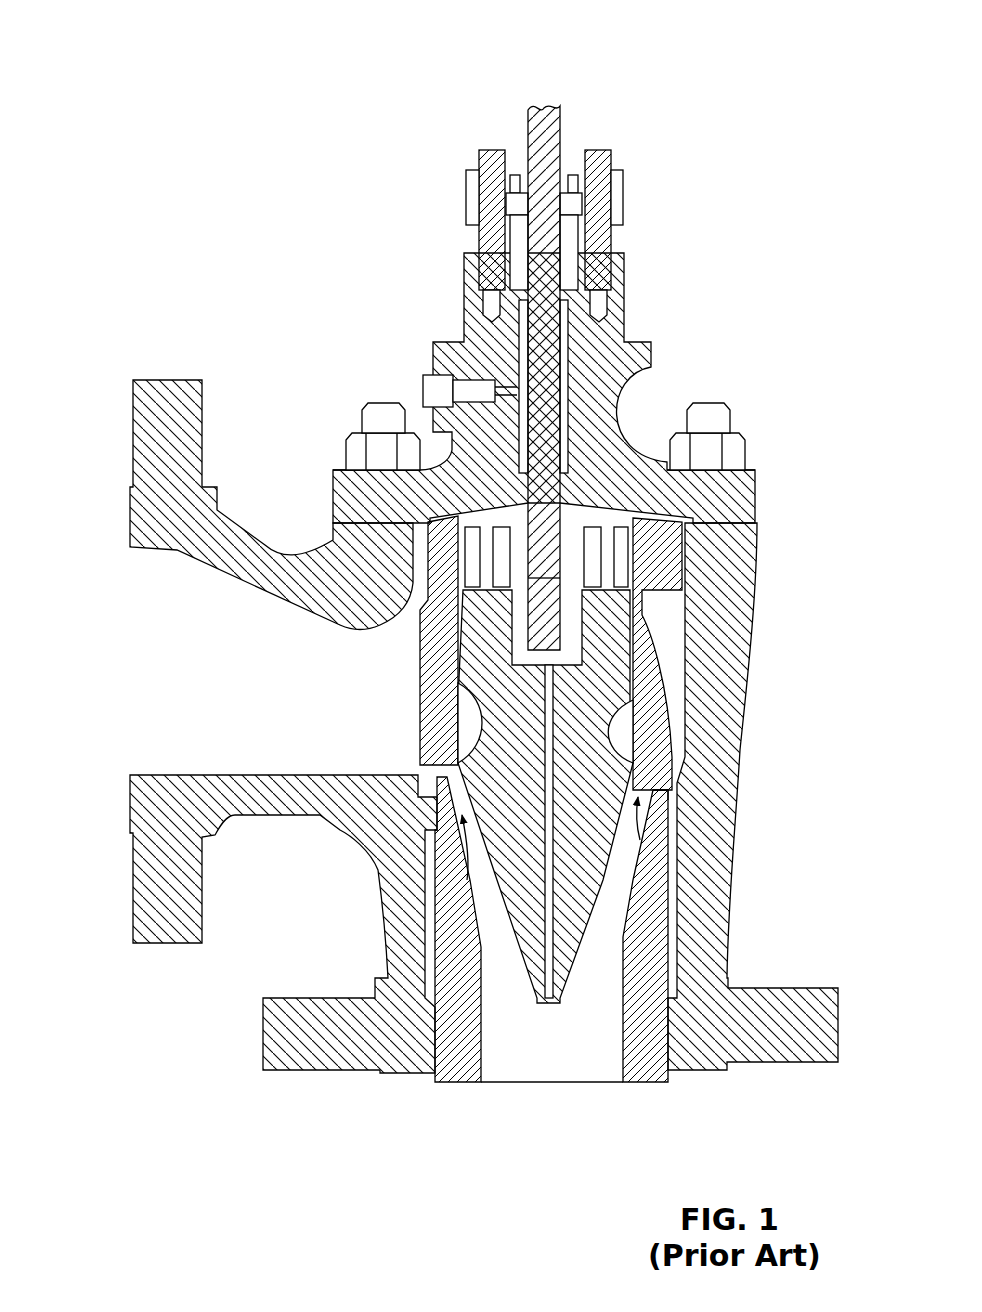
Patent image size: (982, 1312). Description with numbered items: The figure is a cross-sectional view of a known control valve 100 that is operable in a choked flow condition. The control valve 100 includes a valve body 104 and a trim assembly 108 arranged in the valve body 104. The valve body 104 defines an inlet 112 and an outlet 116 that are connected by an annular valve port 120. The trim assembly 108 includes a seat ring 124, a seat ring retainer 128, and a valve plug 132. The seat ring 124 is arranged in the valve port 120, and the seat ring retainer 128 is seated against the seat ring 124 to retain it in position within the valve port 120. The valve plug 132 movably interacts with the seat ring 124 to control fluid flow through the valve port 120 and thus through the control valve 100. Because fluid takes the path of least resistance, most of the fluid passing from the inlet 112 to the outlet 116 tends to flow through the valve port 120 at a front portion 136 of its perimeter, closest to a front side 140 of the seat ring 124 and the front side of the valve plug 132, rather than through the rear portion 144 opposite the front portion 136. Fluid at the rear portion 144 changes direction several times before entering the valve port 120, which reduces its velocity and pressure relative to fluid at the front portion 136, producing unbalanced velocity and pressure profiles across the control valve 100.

The control valve 100 is at (788, 50).
The valve body 104 is at (260, 542).
The trim assembly 108 is at (664, 609).
The inlet 112 is at (128, 692).
The outlet 116 is at (563, 1067).
The annular valve port 120 is at (655, 798).
The seat ring 124 is at (672, 790).
The seat ring retainer 128 is at (652, 690).
The valve plug 132 is at (578, 898).
The front portion 136 is at (396, 728).
The front side 140 is at (460, 870).
The rear portion 144 is at (645, 840).